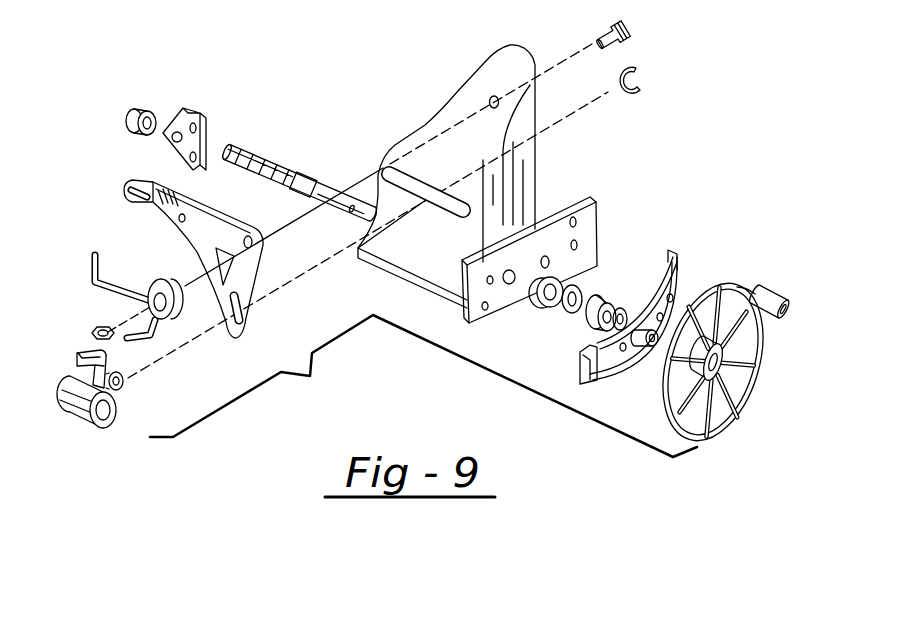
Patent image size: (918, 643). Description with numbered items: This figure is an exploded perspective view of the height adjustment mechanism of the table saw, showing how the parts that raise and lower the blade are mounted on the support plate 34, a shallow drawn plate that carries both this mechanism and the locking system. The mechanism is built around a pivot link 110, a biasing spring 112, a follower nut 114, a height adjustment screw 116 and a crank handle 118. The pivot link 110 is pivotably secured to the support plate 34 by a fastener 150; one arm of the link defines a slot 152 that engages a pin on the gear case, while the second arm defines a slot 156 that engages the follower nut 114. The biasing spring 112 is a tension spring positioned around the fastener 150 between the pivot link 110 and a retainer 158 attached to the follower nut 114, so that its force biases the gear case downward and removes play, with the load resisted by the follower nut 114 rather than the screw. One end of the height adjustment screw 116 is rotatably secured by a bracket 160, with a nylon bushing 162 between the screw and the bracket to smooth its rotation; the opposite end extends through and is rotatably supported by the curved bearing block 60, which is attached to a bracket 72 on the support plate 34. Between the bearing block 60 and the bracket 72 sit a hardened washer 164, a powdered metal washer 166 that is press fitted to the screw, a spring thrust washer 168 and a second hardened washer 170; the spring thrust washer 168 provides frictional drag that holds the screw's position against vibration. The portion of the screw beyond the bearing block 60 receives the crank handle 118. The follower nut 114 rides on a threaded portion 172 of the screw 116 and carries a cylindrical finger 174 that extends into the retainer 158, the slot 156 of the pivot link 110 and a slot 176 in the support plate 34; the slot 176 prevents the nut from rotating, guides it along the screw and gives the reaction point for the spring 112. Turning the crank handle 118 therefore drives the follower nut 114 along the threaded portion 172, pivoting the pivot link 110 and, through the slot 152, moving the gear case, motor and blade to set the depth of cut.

The support plate 34 is at (487, 146).
The bearing block 60 is at (605, 308).
The bracket 72 is at (595, 204).
The pivot link 110 is at (189, 251).
The biasing spring 112 is at (93, 281).
The follower nut 114 is at (80, 427).
The height adjustment screw 116 is at (300, 158).
The crank handle 118 is at (703, 432).
The fastener 150 is at (630, 26).
The slot 152 is at (128, 197).
The slot 156 is at (262, 318).
The retainer 158 is at (80, 353).
The bracket 160 is at (203, 107).
The nylon bushing 162 is at (125, 119).
The hardened washer 164 is at (622, 307).
The powdered metal washer 166 is at (581, 345).
The spring thrust washer 168 is at (570, 316).
The hardened washer 170 is at (540, 305).
The threaded portion 172 is at (232, 148).
The cylindrical finger 174 is at (122, 383).
The slot 176 is at (402, 177).